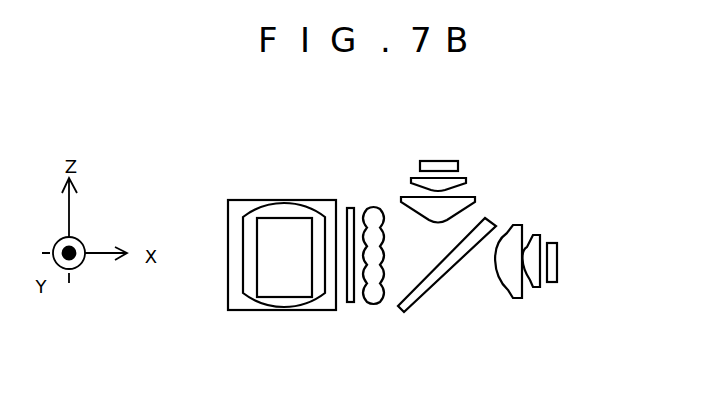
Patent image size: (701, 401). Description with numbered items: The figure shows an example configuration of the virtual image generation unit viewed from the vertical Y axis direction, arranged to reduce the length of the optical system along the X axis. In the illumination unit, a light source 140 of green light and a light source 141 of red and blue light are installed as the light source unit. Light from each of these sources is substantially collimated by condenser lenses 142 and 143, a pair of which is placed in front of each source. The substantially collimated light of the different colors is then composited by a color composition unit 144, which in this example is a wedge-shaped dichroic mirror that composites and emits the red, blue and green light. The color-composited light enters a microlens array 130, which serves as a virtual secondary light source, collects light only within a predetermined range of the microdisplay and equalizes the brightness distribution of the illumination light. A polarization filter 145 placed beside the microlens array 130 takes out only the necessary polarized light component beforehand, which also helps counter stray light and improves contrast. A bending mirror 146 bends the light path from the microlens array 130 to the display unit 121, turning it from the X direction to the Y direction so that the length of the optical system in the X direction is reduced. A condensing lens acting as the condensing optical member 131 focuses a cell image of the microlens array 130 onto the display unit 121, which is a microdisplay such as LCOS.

The display unit 121 is at (282, 287).
The condensing optical member 131 is at (248, 249).
The bending mirror 146 is at (244, 208).
The polarization filter 145 is at (353, 207).
The microlens array 130 is at (375, 208).
The light source 141 is at (444, 160).
The condenser lens 142 is at (467, 181).
The condenser lens 143 is at (477, 199).
The color composition unit 144 is at (445, 270).
The light source 140 is at (557, 261).